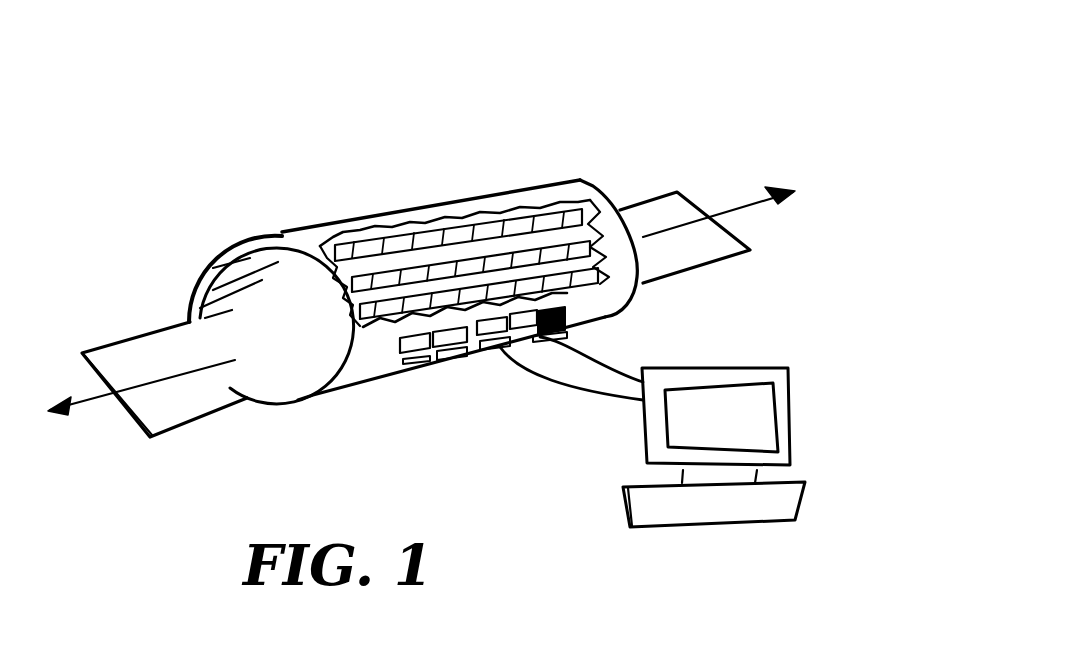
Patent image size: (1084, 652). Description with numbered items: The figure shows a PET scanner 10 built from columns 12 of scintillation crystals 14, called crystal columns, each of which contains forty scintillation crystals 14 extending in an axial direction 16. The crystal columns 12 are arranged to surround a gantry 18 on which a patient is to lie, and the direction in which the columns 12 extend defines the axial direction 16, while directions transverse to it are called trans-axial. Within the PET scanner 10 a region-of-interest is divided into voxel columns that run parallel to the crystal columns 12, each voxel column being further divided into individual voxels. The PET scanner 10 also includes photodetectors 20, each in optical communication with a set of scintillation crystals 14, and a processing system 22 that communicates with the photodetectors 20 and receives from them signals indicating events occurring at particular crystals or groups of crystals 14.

The PET scanner 10 is at (418, 88).
The crystal column 12 is at (597, 222).
The scintillation crystal 14 is at (367, 240).
The axial direction 16 is at (750, 208).
The gantry 18 is at (200, 423).
The photodetector 20 is at (461, 357).
The processing system 22 is at (799, 421).